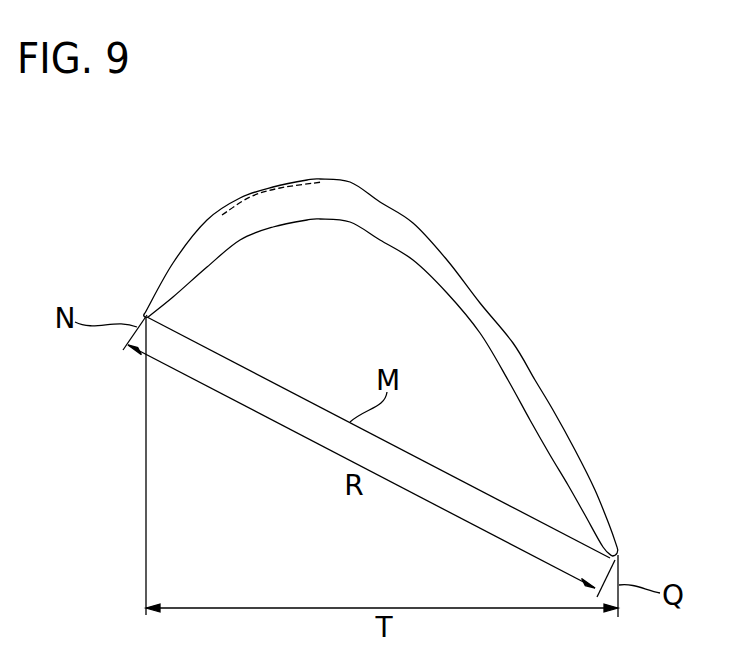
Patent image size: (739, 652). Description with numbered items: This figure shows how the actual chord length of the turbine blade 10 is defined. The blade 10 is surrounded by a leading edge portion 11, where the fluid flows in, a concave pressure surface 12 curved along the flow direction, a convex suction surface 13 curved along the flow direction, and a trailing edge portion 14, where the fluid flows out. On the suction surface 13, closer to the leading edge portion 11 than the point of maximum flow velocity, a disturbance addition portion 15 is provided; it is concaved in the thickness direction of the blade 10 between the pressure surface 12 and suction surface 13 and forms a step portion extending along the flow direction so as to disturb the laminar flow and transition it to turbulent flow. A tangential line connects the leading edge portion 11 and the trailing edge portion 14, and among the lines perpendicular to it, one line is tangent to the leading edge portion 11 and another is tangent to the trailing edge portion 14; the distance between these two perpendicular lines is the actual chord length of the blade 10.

The blade 10 is at (547, 332).
The leading edge portion 11 is at (143, 314).
The pressure surface 12 is at (241, 243).
The suction surface 13 is at (187, 247).
The trailing edge portion 14 is at (620, 559).
The disturbance addition portion 15 is at (327, 182).